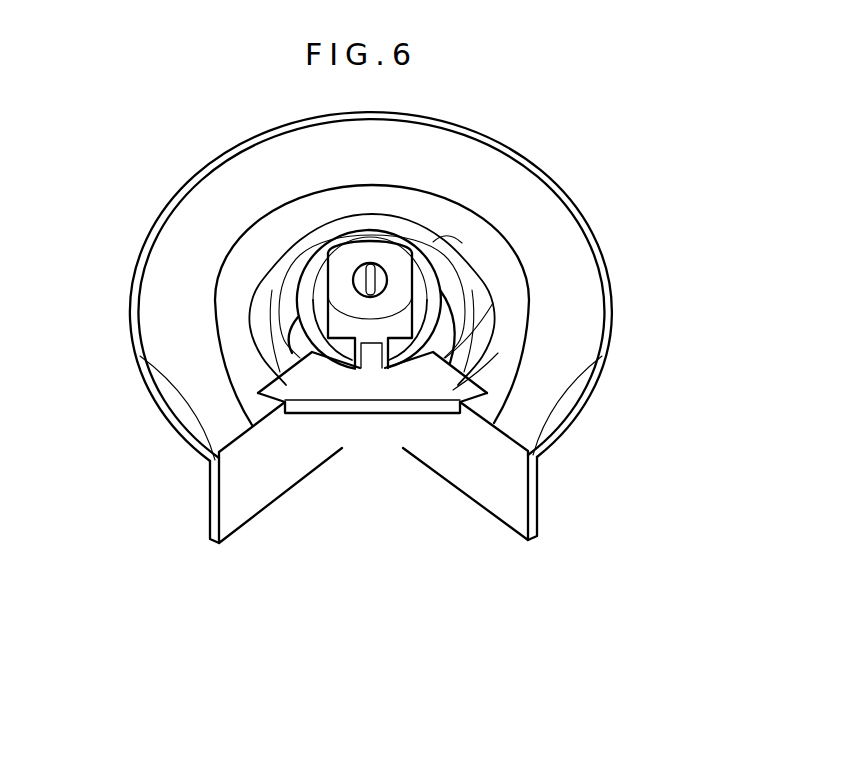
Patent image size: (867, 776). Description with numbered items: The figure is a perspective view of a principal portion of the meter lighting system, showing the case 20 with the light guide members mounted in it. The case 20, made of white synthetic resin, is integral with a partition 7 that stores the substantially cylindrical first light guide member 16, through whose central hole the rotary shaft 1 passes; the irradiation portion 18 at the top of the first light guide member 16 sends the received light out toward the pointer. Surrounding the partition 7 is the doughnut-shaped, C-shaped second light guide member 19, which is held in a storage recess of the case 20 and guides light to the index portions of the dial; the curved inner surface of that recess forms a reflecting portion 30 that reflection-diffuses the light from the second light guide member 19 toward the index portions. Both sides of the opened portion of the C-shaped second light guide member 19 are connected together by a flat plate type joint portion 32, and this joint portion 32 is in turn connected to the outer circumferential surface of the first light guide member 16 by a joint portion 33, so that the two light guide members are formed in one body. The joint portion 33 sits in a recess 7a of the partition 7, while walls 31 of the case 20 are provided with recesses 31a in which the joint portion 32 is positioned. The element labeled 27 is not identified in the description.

The rotary shaft 1 is at (407, 318).
The partition 7 is at (313, 291).
The recess 7a is at (247, 413).
The first light guide member 16 is at (542, 345).
The irradiation portion 18 is at (385, 254).
The second light guide member 19 is at (252, 244).
The case 20 is at (140, 308).
The rib portion 27 is at (508, 392).
The reflecting portion 30 is at (168, 312).
The walls 31 is at (232, 490).
The recesses 31a is at (300, 427).
The joint portion 32 is at (353, 390).
The joint portion 33 is at (372, 362).